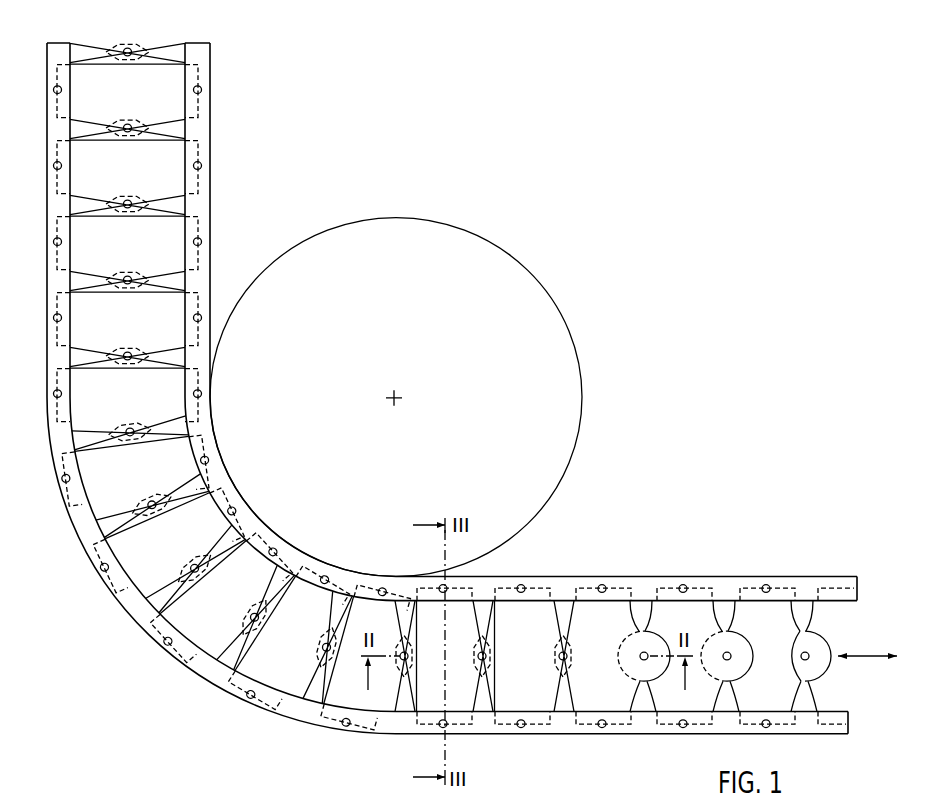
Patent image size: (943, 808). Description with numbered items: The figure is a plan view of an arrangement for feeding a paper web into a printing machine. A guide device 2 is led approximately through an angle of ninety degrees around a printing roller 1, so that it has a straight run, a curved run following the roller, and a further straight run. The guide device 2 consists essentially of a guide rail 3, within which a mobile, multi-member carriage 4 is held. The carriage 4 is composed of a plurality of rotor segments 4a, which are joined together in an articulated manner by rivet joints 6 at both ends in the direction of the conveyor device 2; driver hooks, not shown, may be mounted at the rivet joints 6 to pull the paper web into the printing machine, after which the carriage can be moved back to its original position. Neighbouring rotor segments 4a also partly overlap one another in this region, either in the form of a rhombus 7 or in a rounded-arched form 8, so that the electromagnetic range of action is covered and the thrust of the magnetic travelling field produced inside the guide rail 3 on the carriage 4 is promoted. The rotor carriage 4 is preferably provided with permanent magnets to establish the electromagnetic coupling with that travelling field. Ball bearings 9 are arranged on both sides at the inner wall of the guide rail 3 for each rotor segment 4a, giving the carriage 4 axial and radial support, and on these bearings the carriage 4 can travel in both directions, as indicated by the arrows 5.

The printing roller 1 is at (527, 302).
The guide device 2 is at (222, 150).
The guide rail 3 is at (212, 203).
The carriage 4 is at (816, 615).
The rotor segments 4a is at (645, 642).
The arrows 5 is at (866, 656).
The rivet joints 6 is at (129, 124).
The rhombus 7 is at (490, 680).
The rounded-arched form 8 is at (632, 685).
The ball bearings 9 is at (204, 90).